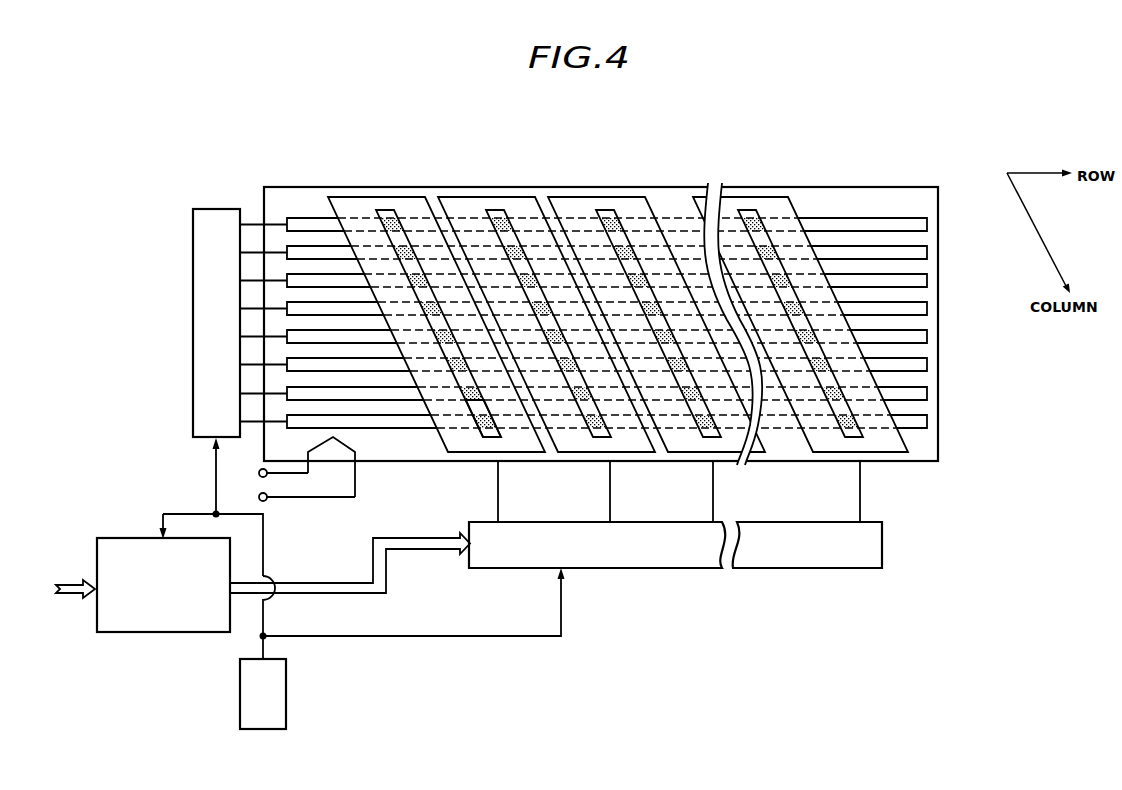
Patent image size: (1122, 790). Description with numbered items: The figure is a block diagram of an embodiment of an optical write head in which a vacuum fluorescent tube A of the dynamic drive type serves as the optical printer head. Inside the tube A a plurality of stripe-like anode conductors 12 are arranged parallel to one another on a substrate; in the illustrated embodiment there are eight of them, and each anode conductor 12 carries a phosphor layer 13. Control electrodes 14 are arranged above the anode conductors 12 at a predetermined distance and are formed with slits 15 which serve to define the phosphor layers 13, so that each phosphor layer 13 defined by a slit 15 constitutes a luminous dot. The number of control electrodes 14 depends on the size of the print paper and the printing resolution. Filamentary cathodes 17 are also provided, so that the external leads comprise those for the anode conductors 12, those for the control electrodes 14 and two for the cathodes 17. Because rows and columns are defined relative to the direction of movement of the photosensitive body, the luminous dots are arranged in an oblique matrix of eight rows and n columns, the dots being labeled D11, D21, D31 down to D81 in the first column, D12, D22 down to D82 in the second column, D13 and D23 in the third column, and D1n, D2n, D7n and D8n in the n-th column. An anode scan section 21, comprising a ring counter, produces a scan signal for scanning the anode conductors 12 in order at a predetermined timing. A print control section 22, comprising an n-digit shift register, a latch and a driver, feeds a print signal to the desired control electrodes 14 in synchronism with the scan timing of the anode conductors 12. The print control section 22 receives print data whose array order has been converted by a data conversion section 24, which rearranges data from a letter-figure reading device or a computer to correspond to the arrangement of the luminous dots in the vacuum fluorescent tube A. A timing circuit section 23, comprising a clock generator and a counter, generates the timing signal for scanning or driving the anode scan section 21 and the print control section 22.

The vacuum fluorescent tube A is at (881, 178).
The anode conductor 12 is at (309, 219).
The phosphor layer 13 is at (386, 209).
The control electrode 14 is at (527, 440).
The slit 15 is at (492, 436).
The filamentary cathode 17 is at (343, 450).
The anode scan section 21 is at (205, 284).
The print control section 22 is at (673, 569).
The timing circuit section 23 is at (277, 697).
The data conversion section 24 is at (162, 622).
The luminous dot D11 is at (398, 218).
The luminous dot D21 is at (405, 252).
The luminous dot D31 is at (420, 282).
The luminous dot D81 is at (482, 423).
The luminous dot D12 is at (507, 217).
The luminous dot D22 is at (521, 253).
The luminous dot D82 is at (600, 437).
The luminous dot D13 is at (610, 217).
The luminous dot D23 is at (627, 253).
The luminous dot D1n is at (755, 220).
The luminous dot D2n is at (770, 250).
The luminous dot D7n is at (845, 392).
The luminous dot D8n is at (858, 420).